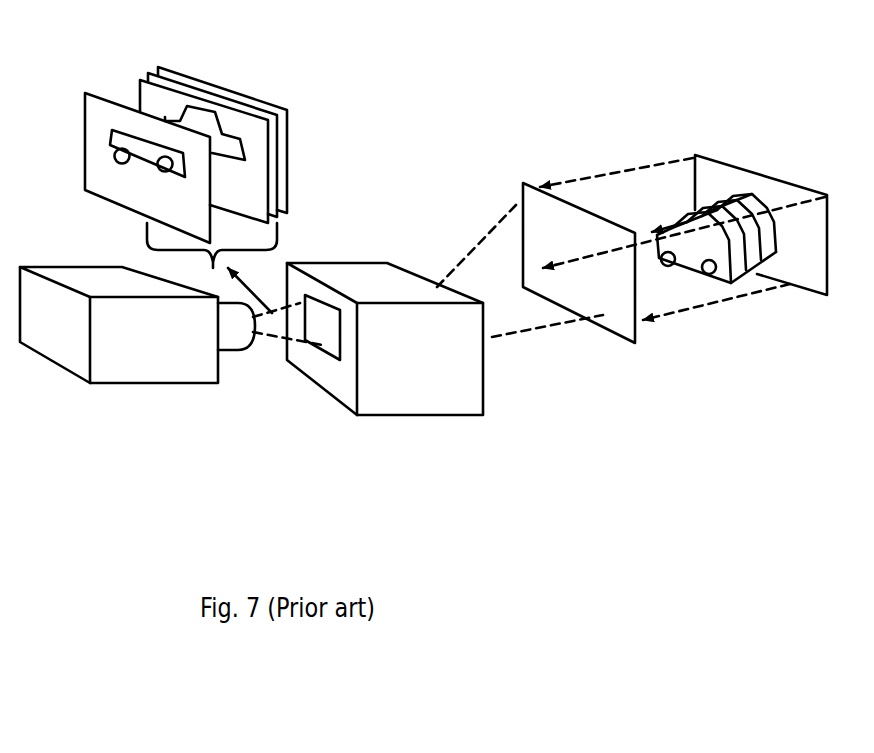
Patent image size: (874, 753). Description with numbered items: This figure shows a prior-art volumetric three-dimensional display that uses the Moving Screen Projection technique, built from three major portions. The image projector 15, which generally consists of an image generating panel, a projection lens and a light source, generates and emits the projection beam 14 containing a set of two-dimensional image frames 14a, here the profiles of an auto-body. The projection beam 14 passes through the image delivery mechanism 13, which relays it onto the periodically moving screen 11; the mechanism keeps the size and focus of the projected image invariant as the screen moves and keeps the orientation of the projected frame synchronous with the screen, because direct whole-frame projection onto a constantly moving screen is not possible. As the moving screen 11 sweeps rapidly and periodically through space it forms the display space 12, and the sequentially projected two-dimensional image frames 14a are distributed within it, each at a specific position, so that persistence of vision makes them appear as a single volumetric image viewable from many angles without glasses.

The moving screen 11 is at (805, 253).
The display space 12 is at (720, 287).
The image delivery mechanism 13 is at (437, 382).
The projection beam 14 is at (277, 325).
The set of 2D image frames 14a is at (292, 140).
The image projector 15 is at (177, 357).